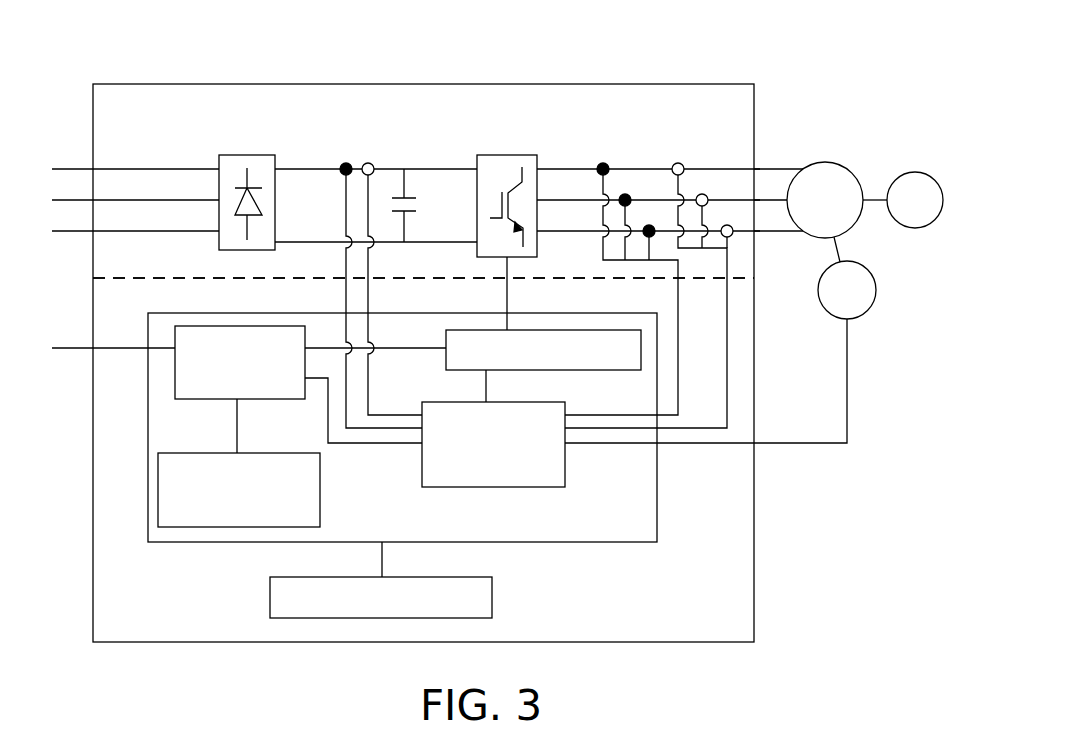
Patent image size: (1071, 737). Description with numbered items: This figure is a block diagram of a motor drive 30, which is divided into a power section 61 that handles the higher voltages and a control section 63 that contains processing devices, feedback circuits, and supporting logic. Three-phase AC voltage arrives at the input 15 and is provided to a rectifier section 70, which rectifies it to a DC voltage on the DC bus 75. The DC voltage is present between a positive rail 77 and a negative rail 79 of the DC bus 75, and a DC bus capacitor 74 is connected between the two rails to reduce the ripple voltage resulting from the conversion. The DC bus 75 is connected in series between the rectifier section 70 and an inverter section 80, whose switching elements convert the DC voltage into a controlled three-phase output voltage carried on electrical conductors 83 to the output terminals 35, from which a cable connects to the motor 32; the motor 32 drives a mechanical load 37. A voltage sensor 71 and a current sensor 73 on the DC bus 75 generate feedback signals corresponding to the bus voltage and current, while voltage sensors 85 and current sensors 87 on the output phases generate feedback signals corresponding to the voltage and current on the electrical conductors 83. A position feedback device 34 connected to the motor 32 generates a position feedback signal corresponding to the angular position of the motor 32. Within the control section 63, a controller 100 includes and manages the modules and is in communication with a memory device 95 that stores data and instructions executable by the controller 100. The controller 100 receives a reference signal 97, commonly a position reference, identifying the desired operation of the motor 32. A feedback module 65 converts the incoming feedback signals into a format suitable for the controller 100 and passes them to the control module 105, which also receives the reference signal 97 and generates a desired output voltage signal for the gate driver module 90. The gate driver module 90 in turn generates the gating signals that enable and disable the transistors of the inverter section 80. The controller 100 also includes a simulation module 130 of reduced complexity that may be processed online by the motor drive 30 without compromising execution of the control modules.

The motor drive 30 is at (703, 50).
The input 15 is at (86, 165).
The output terminal 35 is at (757, 166).
The motor 32 is at (849, 171).
The mechanical load 37 is at (929, 175).
The position feedback device 34 is at (866, 311).
The power section 61 is at (104, 258).
The control section 63 is at (104, 293).
The rectifier section 70 is at (242, 155).
The positive rail 77 is at (289, 167).
The negative rail 79 is at (317, 242).
The DC bus 75 is at (282, 173).
The voltage sensor 71 is at (344, 165).
The current sensor 73 is at (368, 163).
The DC bus capacitor 74 is at (418, 216).
The inverter section 80 is at (507, 155).
The electrical conductor 83 is at (563, 169).
The voltage sensors 85 is at (649, 225).
The current sensors 87 is at (727, 225).
The controller 100 is at (197, 313).
The reference signal 97 is at (116, 352).
The control module 105 is at (305, 340).
The simulation module 130 is at (320, 500).
The gate driver module 90 is at (562, 370).
The feedback module 65 is at (447, 402).
The memory device 95 is at (492, 602).